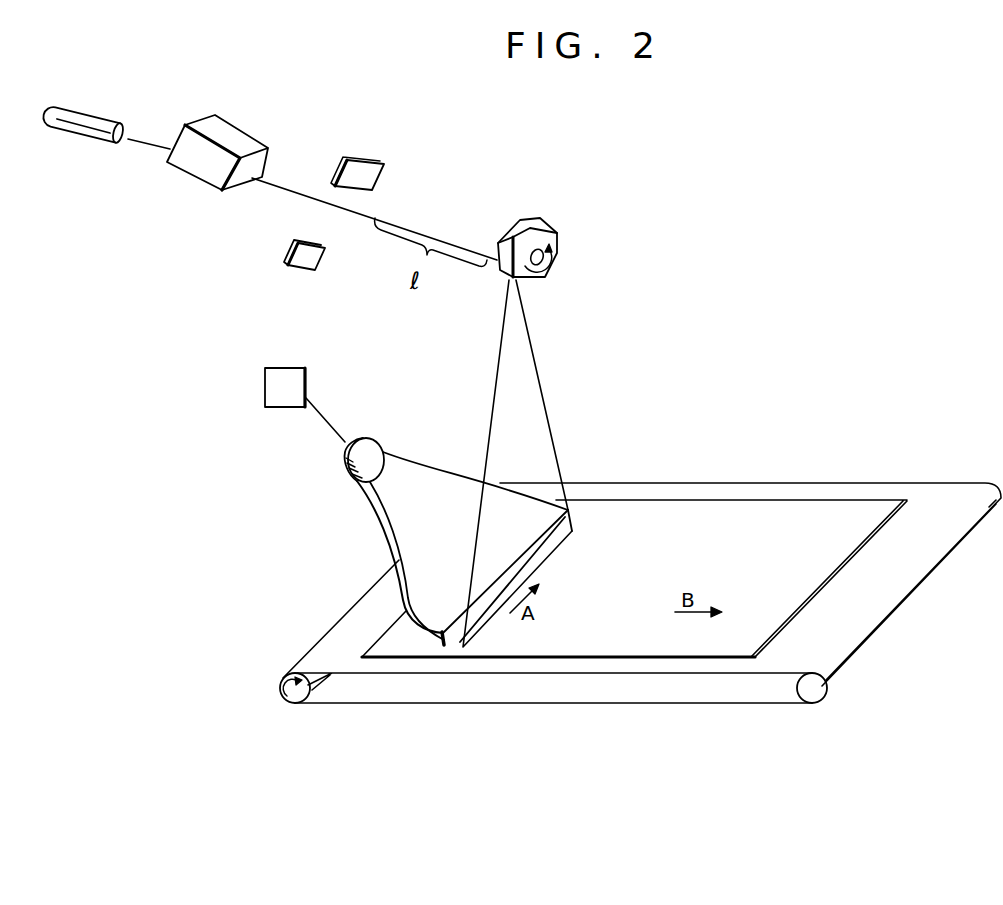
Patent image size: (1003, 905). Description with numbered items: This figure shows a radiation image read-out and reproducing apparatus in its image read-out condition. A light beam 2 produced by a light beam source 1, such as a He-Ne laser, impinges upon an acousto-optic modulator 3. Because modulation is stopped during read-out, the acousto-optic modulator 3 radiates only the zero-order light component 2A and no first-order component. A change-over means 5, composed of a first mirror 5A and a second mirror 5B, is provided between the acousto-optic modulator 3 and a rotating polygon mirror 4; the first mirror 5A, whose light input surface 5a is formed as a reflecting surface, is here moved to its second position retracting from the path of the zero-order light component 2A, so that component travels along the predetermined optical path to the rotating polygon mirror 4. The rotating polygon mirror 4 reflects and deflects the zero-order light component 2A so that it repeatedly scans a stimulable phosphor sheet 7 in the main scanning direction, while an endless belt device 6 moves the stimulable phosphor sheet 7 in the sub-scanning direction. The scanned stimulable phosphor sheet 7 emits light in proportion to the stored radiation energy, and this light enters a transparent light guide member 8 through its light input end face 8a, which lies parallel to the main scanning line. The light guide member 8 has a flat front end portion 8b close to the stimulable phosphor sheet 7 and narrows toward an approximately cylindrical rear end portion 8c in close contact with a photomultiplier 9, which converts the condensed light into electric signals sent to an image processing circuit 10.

The light beam source 1 is at (90, 134).
The light beam 2 is at (145, 143).
The zero-order light component 2A is at (295, 188).
The acousto-optic modulator 3 is at (231, 137).
The rotating polygon mirror 4 is at (513, 236).
The change-over means 5 is at (384, 196).
The first mirror 5A is at (383, 156).
The light input surface 5a is at (358, 172).
The second mirror 5B is at (325, 247).
The endless belt device 6 is at (890, 485).
The stimulable phosphor sheet 7 is at (784, 513).
The light guide member 8 is at (467, 534).
The light input end face 8a is at (540, 548).
The flat front end portion 8b is at (529, 525).
The cylindrical rear end portion 8c is at (380, 473).
The photomultiplier 9 is at (370, 449).
The image processing circuit 10 is at (288, 367).